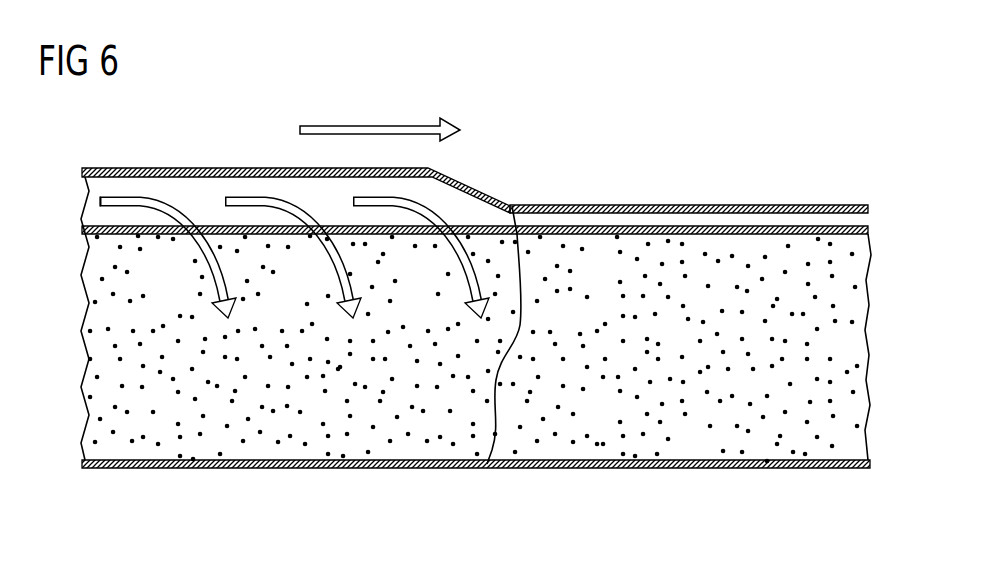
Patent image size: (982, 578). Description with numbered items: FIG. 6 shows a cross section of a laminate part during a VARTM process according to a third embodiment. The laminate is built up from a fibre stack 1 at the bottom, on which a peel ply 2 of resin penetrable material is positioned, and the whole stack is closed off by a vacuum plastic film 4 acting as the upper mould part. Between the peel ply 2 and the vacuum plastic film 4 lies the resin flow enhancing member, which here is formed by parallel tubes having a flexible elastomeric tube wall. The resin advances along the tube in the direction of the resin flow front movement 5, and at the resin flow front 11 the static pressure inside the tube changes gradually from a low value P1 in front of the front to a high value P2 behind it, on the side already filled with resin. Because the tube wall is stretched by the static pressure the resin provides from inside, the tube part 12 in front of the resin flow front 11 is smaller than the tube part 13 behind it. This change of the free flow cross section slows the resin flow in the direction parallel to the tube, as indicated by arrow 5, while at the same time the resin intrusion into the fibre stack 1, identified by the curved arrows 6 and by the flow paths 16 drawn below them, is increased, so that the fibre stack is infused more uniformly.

The fibre stack 1 is at (849, 341).
The peel ply 2 is at (83, 229).
The vacuum plastic film 4 is at (733, 469).
The resin flow front movement 5 is at (370, 128).
The resin flow 6 is at (118, 200).
The resin flow front 11 is at (522, 316).
The tube part 12 is at (826, 212).
The tube part 13 is at (213, 186).
The flow arrows through openings 16 is at (185, 238).
The static pressure in front of the resin flow front P1 is at (688, 445).
The static pressure behind the resin flow front P2 is at (290, 445).